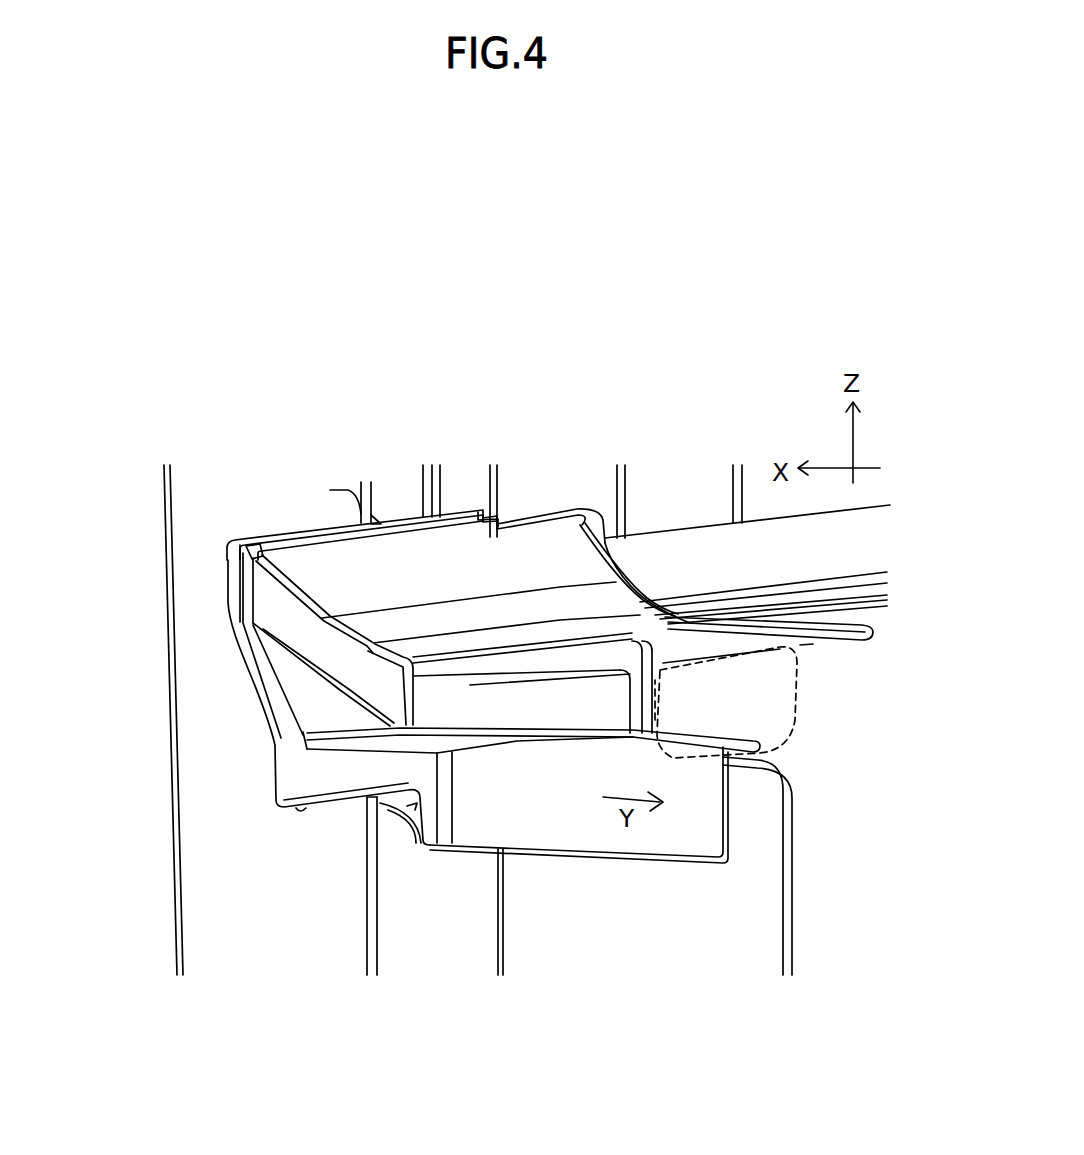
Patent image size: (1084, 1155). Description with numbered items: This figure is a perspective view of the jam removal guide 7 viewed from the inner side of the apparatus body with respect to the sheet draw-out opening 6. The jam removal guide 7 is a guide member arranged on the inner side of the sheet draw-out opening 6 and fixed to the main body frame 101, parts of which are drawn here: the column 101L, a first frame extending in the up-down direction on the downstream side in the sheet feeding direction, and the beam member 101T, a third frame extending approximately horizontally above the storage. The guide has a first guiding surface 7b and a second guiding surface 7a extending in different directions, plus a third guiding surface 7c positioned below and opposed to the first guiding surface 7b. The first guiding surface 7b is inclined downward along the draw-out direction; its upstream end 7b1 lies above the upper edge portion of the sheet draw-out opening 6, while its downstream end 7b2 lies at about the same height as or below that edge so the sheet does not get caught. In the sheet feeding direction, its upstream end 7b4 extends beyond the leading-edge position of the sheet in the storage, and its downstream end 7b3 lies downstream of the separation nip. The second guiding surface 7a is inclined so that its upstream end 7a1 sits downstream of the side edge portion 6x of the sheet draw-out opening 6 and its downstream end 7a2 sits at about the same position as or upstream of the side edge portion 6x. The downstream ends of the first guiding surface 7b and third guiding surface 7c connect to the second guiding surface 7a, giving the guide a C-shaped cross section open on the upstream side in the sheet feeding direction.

The jam removal guide 7 is at (600, 864).
The second guiding surface 7a is at (313, 647).
The upstream end of the second guiding surface 7a1 is at (247, 594).
The downstream end of the second guiding surface 7a2 is at (638, 718).
The first guiding surface 7b is at (390, 578).
The upstream end of the first guiding surface 7b1 is at (398, 523).
The downstream end of the first guiding surface 7b2 is at (810, 652).
The downstream end of the first guiding surface in the sheet feeding direction 7b3 is at (263, 542).
The upstream end of the first guiding surface in the sheet feeding direction 7b4 is at (707, 620).
The third guiding surface 7c is at (478, 735).
The sheet draw-out opening 6 is at (797, 727).
The side edge portion 6x is at (657, 695).
The main body frame 101 is at (160, 805).
The beam member 101T is at (833, 555).
The column 101L is at (770, 900).